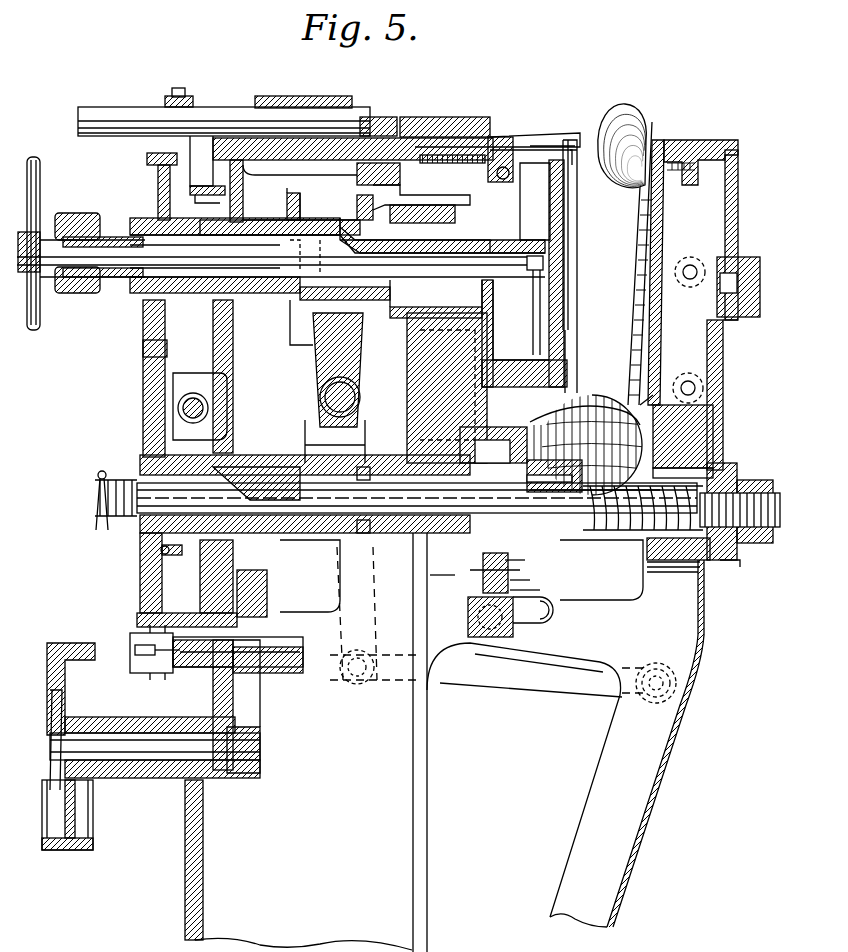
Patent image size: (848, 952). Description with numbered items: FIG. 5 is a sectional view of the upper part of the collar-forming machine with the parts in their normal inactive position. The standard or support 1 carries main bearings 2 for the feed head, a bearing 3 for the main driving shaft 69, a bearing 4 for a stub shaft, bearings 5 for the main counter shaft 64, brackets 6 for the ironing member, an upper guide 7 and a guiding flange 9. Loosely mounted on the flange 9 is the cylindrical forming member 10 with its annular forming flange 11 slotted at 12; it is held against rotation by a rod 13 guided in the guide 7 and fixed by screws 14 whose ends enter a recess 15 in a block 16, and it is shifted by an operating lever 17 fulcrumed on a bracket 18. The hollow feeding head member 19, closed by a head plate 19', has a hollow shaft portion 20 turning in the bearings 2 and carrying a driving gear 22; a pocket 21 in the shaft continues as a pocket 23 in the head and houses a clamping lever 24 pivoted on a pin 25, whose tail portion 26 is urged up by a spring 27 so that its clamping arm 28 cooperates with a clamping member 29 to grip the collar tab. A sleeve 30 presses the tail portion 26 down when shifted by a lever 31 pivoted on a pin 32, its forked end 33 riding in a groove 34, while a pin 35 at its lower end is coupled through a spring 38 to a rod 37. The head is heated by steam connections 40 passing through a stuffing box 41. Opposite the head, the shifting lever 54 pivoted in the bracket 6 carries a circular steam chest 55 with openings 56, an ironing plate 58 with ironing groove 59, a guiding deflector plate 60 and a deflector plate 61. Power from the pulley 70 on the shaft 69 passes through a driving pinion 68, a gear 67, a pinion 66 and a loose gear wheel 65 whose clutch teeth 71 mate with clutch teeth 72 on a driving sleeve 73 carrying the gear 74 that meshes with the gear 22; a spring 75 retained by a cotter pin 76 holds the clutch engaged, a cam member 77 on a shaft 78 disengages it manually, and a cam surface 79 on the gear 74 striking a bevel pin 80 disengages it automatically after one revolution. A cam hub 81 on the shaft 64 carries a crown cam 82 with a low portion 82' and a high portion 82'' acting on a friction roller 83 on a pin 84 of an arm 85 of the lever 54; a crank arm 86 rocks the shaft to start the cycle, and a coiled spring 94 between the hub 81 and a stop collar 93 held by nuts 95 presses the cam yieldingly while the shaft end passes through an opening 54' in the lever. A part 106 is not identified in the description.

The standard or support 1 is at (398, 852).
The main bearings 2 is at (205, 310).
The bearing for the main driving shaft 3 is at (183, 782).
The bearing for a stub shaft 4 is at (190, 668).
The bearings for the main counter shaft 5 is at (194, 555).
The brackets for the ironing member 6 is at (462, 660).
The upper guide 7 is at (290, 100).
The guiding flange 9 is at (510, 133).
The cylindrical forming member 10 is at (480, 120).
The forming flange 11 is at (570, 138).
The slot 12 is at (535, 147).
The rod 13 is at (105, 118).
The screws 14 is at (384, 118).
The recess 15 is at (418, 116).
The block 16 is at (445, 135).
The operating lever 17 is at (192, 100).
The bracket 18 is at (214, 180).
The feeding head member 19 is at (544, 333).
The head plate 19' is at (614, 263).
The hollow shaft portion 20 is at (337, 256).
The pocket 21 is at (385, 240).
The driving gear 22 is at (150, 212).
The pocket 23 is at (520, 240).
The clamping member or lever 24 is at (516, 207).
The pin 25 is at (503, 180).
The tail portion 26 is at (390, 225).
The spring 27 is at (455, 250).
The clamping arm 28 is at (575, 150).
The clamping member 29 is at (560, 137).
The cylindrical sleeve member 30 is at (286, 206).
The lever 31 is at (335, 443).
The pin 32 is at (358, 397).
The forked end 33 is at (313, 325).
The groove 34 is at (322, 215).
The pin 35 is at (583, 688).
The rod 37 is at (138, 672).
The spring 38 is at (160, 675).
The steam connections 40 is at (520, 270).
The stuffing box construction 41 is at (80, 295).
The shifting lever 54 is at (655, 743).
The opening 54' is at (688, 604).
The circular steam chest 55 is at (730, 230).
The openings 56 is at (697, 388).
The ironing plate 58 is at (642, 400).
The ironing groove 59 is at (670, 147).
The guiding deflector plate 60 is at (630, 110).
The deflector plate 61 is at (560, 408).
The main counter shaft 64 is at (461, 574).
The gear wheel 65 is at (270, 590).
The pinion 66 is at (340, 672).
The gear 67 is at (262, 715).
The driving pinion 68 is at (245, 780).
The main driving shaft 69 is at (135, 770).
The pulley 70 is at (75, 850).
The clutch teeth 71 is at (305, 478).
The clutch teeth 72 is at (250, 465).
The driving sleeve 73 is at (160, 548).
The driving gear 74 is at (143, 368).
The spring 75 is at (108, 480).
The cotter pin 76 is at (96, 518).
The shifting cam member 77 is at (190, 378).
The shaft 78 is at (180, 408).
The cam surface 79 is at (160, 553).
The bevel pin 80 is at (162, 560).
The cam hub 81 is at (490, 445).
The crown cam 82 is at (469, 566).
The low portion 82' is at (549, 586).
The high portion 82'' is at (416, 589).
The friction roller 83 is at (512, 565).
The pin 84 is at (480, 575).
The arm 85 is at (560, 625).
The crank arm member 86 is at (540, 585).
The stop collar 93 is at (732, 562).
The coiled spring 94 is at (695, 562).
The nuts 95 is at (752, 480).
The nut 106 is at (470, 620).